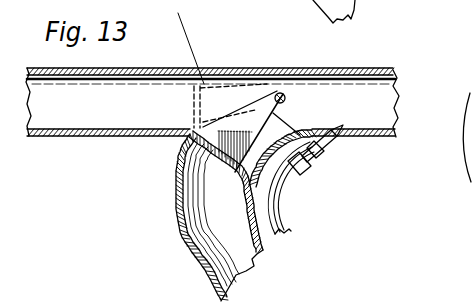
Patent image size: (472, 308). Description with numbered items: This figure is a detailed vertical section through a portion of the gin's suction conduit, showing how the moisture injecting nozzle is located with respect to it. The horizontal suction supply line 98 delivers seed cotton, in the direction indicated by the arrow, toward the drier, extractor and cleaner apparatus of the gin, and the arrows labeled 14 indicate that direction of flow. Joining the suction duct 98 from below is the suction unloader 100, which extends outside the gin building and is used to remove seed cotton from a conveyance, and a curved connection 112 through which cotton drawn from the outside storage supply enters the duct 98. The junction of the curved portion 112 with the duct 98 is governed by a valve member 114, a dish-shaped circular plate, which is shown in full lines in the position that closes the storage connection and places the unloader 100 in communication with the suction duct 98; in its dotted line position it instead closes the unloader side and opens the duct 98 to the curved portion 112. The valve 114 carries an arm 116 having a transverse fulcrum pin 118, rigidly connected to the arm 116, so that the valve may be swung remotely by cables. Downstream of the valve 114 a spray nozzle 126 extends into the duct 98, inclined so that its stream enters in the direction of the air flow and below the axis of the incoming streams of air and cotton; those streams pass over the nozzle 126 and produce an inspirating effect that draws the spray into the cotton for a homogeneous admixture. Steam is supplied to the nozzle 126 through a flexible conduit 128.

The exhaust pipe assembly 14 is at (167, 50).
The suction supply line 98 is at (233, 111).
The suction unloader 100 is at (64, 137).
The curved connection 112 is at (182, 231).
The valve member 114 is at (181, 165).
The arm 116 is at (285, 112).
The fulcrum pin 118 is at (284, 94).
The spray nozzle 126 is at (328, 150).
The flexible conduit 128 is at (291, 222).